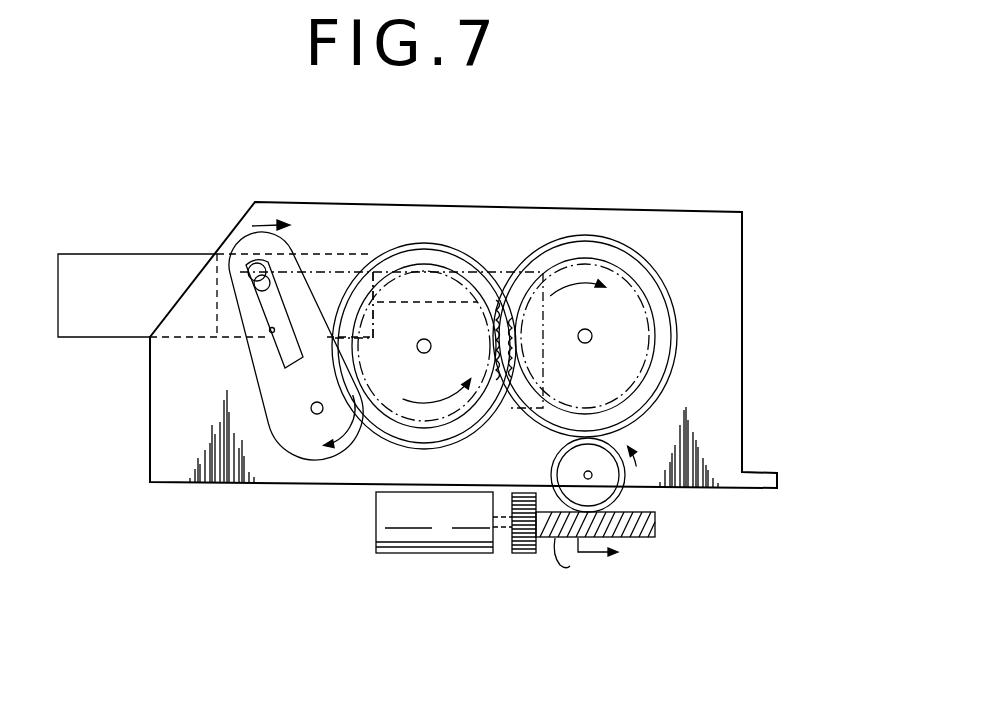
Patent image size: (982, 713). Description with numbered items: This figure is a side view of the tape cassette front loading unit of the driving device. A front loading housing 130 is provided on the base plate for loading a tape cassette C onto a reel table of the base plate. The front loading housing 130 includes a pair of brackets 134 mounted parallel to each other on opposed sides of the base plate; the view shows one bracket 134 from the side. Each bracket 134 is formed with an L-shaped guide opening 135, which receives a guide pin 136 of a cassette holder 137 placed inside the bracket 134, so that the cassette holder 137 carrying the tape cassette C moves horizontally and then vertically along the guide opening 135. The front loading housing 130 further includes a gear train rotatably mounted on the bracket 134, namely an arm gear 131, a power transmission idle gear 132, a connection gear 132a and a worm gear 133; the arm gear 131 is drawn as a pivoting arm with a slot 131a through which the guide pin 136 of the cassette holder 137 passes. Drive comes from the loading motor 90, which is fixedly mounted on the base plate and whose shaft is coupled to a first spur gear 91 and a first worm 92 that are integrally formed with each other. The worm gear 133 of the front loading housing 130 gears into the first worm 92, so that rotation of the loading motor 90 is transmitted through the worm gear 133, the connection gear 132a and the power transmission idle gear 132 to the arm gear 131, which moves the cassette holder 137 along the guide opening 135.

The front loading housing 130 is at (748, 210).
The bracket 134 is at (730, 347).
The tape cassette C is at (100, 256).
The L-shaped guide opening 135 is at (327, 273).
The cassette holder 137 is at (357, 270).
The arm gear 131 is at (280, 448).
The slot of lever 131a is at (270, 340).
The guide pin 136 is at (247, 261).
The power transmission idle gear 132 is at (447, 250).
The connection gear 132a is at (602, 250).
The worm gear 133 is at (624, 494).
The loading motor 90 is at (440, 545).
The first spur gear 91 is at (523, 553).
The first worm 92 is at (630, 537).